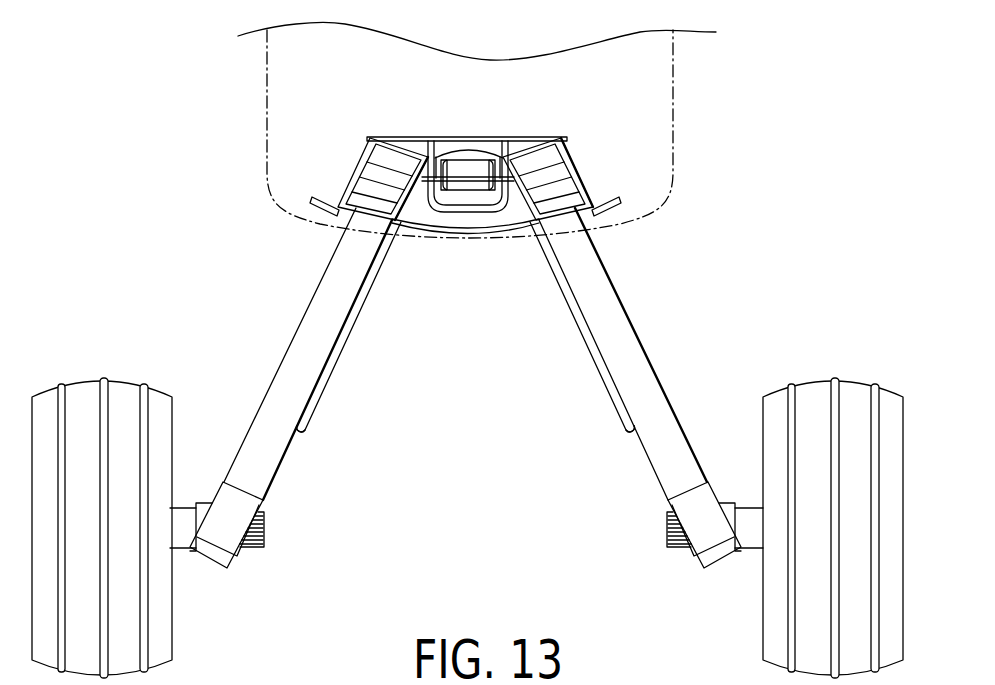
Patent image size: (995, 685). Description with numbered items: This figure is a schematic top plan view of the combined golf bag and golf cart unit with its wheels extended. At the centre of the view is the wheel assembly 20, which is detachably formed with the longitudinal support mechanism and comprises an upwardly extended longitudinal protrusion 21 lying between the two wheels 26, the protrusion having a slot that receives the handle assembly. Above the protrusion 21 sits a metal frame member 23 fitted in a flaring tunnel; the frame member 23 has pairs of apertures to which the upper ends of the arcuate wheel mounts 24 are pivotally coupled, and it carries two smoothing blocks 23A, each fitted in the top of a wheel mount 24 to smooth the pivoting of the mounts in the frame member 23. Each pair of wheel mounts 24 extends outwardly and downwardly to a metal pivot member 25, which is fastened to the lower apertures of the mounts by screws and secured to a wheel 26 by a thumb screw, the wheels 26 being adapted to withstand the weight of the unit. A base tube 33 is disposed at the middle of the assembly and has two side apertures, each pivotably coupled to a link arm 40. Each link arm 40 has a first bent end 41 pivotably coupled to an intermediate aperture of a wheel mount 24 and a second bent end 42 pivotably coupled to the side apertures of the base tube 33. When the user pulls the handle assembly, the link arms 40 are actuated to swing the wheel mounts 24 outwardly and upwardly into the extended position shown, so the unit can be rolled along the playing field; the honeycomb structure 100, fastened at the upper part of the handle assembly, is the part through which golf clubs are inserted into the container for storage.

The honeycomb structure 100 is at (672, 92).
The wheel assembly 20 is at (598, 178).
The longitudinal protrusion 21 is at (468, 214).
The frame member 23 is at (367, 148).
The smoothing block 23A is at (365, 210).
The wheel mount 24 is at (316, 298).
The pivot member 25 is at (232, 568).
The wheel 26 is at (86, 396).
The base tube 33 is at (467, 170).
The link arm 40 is at (368, 305).
The first bent end 41 is at (301, 432).
The second bent end 42 is at (449, 157).